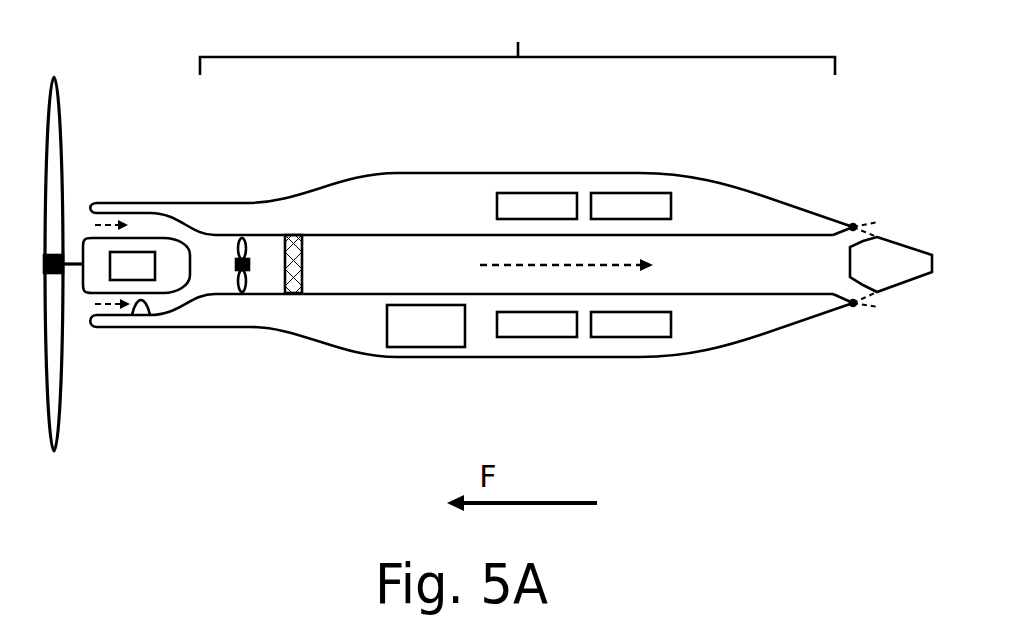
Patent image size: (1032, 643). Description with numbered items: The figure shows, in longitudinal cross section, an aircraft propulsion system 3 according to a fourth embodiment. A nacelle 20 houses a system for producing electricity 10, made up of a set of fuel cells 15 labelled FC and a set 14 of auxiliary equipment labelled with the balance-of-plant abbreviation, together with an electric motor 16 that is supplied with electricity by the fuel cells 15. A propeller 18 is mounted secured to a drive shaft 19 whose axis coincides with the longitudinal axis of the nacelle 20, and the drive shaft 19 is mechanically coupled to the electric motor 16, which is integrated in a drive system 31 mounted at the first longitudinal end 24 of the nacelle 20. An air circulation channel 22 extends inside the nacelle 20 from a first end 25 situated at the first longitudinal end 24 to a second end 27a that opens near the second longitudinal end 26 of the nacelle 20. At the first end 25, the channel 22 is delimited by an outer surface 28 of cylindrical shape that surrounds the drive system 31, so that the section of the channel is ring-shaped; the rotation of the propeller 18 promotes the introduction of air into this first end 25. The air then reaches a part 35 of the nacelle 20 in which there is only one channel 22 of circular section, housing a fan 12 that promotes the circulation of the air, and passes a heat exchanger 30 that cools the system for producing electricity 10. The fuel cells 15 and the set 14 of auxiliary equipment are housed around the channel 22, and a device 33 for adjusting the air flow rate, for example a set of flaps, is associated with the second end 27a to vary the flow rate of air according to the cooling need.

The aircraft propulsion system 3 is at (871, 71).
The system for producing electricity 10 is at (630, 392).
The fan 12 is at (250, 290).
The set of equipment auxiliary to the fuel cells 14 is at (430, 347).
The fuel cells 15 is at (562, 348).
The electric motor 16 is at (132, 252).
The propeller 18 is at (63, 108).
The drive shaft 19 is at (72, 262).
The nacelle 20 is at (722, 187).
The air circulation channel 22 is at (372, 250).
The first longitudinal end of the nacelle 24 is at (108, 350).
The first end of the air circulation channel 25 is at (81, 314).
The second longitudinal end of the nacelle 26 is at (928, 348).
The second end of the air circulation channel 27a is at (818, 278).
The outer surface of the air circulation channel 28 is at (141, 305).
The heat exchanger 30 is at (293, 235).
The drive system 31 is at (157, 238).
The device for adjusting the air flow rate 33 is at (878, 222).
The part of the nacelle 35 is at (517, 37).